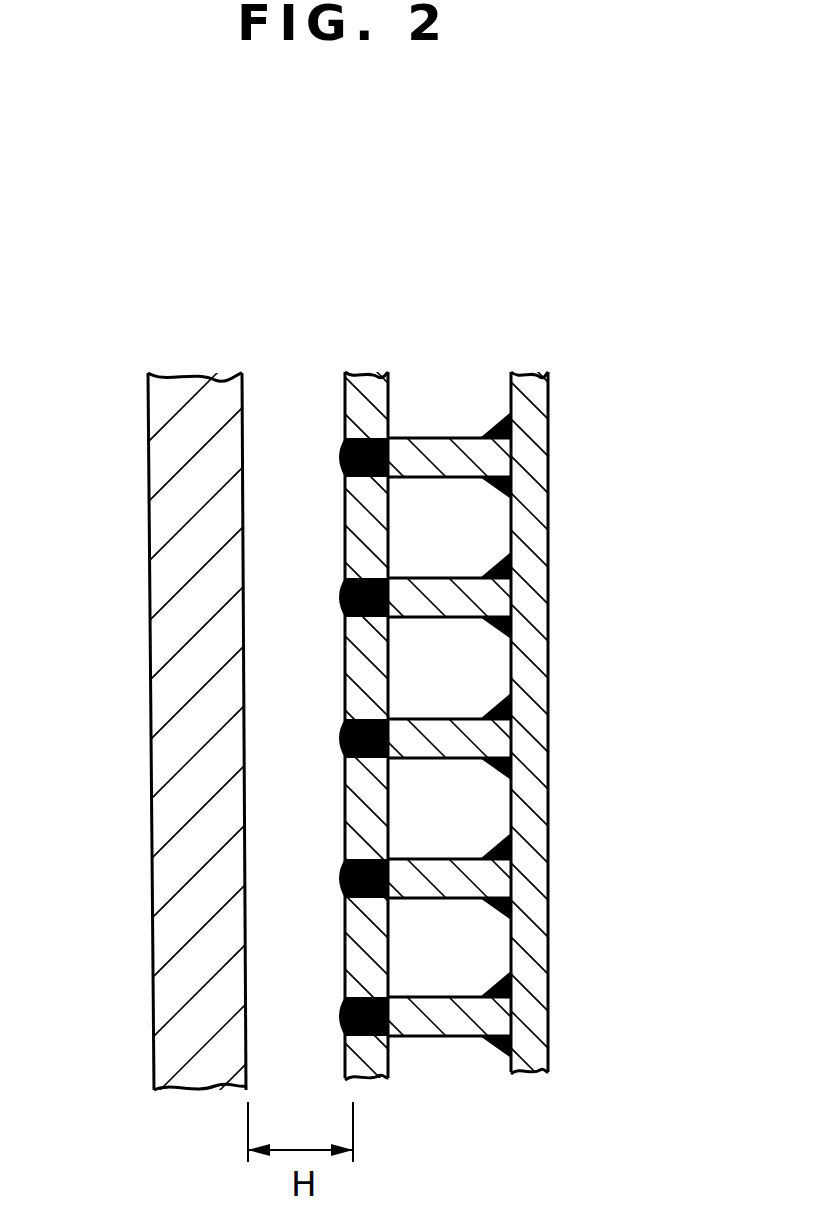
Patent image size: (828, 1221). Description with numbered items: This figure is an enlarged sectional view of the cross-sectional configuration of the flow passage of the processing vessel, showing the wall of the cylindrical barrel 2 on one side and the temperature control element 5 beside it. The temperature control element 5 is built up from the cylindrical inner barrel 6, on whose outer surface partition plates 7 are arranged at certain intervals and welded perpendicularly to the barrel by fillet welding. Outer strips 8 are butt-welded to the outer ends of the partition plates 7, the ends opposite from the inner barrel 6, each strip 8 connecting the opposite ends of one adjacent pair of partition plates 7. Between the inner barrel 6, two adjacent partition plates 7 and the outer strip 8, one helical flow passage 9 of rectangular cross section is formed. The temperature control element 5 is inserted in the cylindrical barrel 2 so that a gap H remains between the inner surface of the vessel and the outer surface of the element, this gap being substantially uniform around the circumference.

The cylindrical barrel 2 is at (160, 650).
The temperature control element 5 is at (482, 731).
The cylindrical inner barrel 6 is at (538, 563).
The partition plate 7 is at (415, 448).
The outer strip 8 is at (360, 542).
The helical flow passage 9 is at (495, 798).